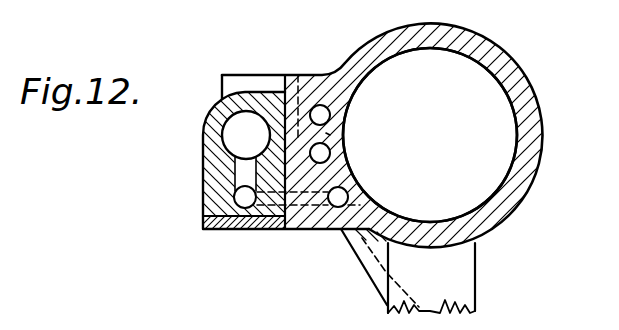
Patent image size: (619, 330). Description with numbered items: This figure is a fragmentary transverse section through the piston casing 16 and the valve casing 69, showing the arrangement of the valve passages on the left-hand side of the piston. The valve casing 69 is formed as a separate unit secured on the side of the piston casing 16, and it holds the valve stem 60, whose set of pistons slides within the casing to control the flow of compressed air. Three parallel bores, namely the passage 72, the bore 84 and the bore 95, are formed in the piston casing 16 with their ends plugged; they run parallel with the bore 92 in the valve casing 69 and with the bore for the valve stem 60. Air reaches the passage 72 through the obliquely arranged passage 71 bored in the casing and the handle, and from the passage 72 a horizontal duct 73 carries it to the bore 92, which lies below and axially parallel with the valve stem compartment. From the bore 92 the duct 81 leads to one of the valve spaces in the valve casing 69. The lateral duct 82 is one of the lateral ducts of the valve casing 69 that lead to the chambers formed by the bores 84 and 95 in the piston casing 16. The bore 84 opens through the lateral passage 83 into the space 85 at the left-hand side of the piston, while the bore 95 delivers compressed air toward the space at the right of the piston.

The piston casing 16 is at (509, 66).
The valve stem 60 is at (236, 131).
The valve casing 69 is at (214, 106).
The obliquely arranged passage 71 is at (358, 276).
The passage 72 is at (337, 208).
The horizontal duct 73 is at (308, 230).
The duct 81 is at (235, 176).
The lateral duct 82 is at (296, 78).
The lateral passage 83 is at (326, 133).
The bore 84 is at (330, 161).
The space 85 is at (464, 111).
The bore 92 is at (242, 204).
The bore 95 is at (322, 105).